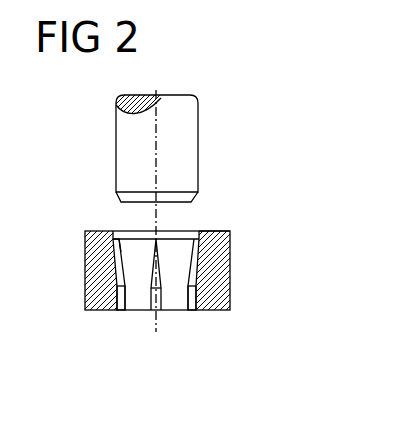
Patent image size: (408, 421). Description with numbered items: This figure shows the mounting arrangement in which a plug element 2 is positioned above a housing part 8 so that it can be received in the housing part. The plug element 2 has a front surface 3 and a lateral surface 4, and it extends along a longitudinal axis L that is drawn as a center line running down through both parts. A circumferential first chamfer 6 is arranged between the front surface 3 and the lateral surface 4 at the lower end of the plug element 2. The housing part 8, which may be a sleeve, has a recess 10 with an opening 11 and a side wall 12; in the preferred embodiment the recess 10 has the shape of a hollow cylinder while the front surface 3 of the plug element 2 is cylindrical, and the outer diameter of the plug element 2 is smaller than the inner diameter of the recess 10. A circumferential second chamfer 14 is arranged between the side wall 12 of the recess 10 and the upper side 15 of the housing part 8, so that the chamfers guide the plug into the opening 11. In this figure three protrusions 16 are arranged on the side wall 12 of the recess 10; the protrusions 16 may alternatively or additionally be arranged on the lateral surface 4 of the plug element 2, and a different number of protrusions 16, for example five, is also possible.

The plug element 2 is at (130, 119).
The lateral surface 4 is at (198, 138).
The longitudinal axis L is at (156, 143).
The first chamfer 6 is at (122, 202).
The housing part 8 is at (86, 262).
The opening 11 is at (181, 231).
The side wall 12 is at (173, 256).
The second chamfer 14 is at (123, 238).
The upper side 15 is at (212, 229).
The front surface 3 is at (147, 274).
The recess 10 is at (175, 294).
The protrusions 16 is at (138, 308).